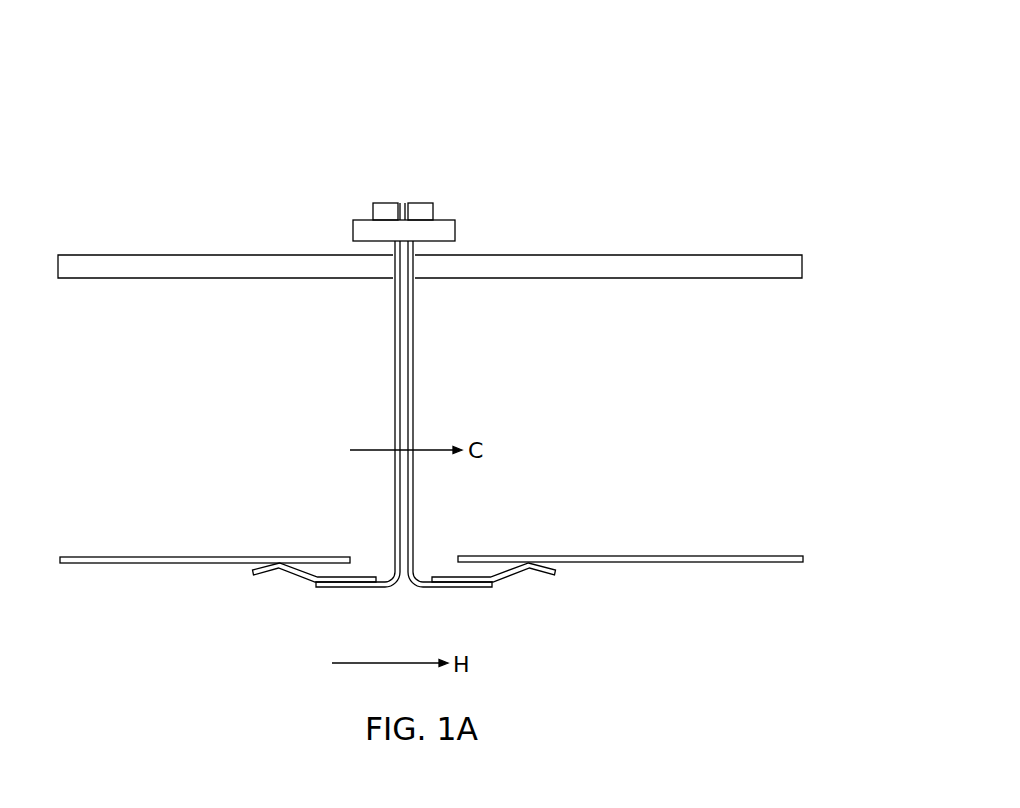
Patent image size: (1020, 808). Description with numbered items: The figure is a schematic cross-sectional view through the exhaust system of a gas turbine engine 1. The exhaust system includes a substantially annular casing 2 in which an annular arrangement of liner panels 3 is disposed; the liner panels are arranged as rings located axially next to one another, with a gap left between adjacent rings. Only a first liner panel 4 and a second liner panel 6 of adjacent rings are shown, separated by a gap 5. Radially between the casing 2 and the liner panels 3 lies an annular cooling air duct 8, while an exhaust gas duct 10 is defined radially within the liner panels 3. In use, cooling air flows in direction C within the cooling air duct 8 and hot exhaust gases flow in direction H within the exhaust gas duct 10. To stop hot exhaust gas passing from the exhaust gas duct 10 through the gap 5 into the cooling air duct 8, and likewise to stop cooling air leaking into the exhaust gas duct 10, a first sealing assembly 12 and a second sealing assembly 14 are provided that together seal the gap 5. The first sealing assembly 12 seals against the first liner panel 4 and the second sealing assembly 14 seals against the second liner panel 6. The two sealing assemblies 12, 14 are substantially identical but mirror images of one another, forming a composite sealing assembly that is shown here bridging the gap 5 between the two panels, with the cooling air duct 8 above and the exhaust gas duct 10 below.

The gas turbine engine 1 is at (681, 38).
The casing 2 is at (527, 255).
The liner panels 3 is at (212, 590).
The first liner panel 4 is at (654, 556).
The gap 5 is at (373, 557).
The second liner panel 6 is at (164, 556).
The cooling air duct 8 is at (684, 390).
The exhaust gas duct 10 is at (686, 652).
The first sealing assembly 12 is at (413, 396).
The second sealing assembly 14 is at (395, 398).